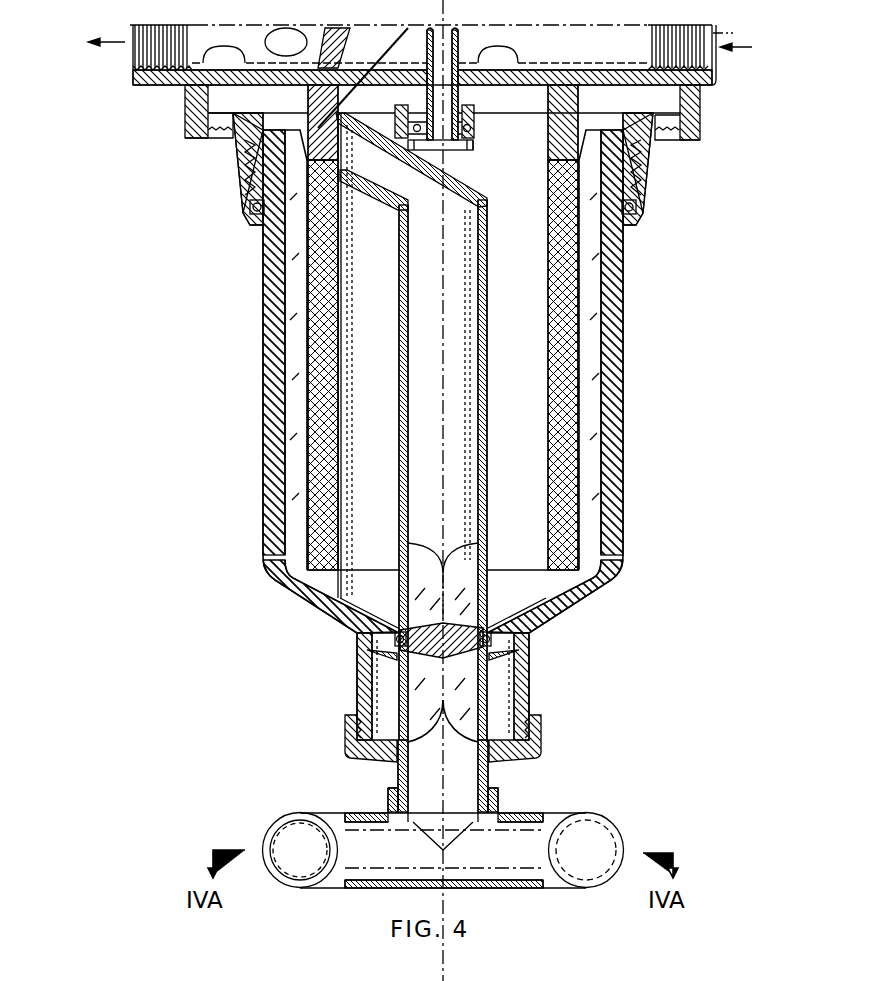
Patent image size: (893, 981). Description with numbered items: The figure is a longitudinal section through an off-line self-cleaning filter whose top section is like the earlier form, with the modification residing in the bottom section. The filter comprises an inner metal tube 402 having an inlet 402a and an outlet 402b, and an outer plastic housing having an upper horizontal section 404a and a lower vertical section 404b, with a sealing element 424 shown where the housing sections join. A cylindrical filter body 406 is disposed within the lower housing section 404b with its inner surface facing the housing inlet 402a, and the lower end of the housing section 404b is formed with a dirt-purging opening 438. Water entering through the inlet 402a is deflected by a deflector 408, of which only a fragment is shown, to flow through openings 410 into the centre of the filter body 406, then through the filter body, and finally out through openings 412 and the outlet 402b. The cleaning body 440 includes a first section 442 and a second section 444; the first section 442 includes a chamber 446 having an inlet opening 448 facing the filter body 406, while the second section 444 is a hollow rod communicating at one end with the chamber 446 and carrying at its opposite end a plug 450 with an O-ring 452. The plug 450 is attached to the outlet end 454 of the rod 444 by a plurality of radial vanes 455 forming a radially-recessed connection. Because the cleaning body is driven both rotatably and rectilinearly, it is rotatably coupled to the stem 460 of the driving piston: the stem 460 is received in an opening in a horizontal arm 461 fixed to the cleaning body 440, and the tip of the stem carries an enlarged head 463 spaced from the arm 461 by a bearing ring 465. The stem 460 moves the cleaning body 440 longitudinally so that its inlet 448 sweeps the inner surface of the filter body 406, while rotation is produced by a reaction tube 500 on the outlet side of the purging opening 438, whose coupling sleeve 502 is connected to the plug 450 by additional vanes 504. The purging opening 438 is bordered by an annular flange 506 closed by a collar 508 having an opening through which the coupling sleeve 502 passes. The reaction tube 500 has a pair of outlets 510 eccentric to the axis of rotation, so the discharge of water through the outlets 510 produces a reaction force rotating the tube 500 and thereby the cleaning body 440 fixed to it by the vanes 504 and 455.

The inner metal tube 402 is at (150, 103).
The inlet 402a is at (710, 72).
The outlet 402b is at (133, 70).
The upper horizontal section 404a is at (668, 126).
The lower vertical section 404b is at (620, 402).
The cylindrical filter body 406 is at (560, 500).
The deflector 408 is at (425, 44).
The openings 410 is at (506, 54).
The openings 412 is at (285, 28).
The O-ring seal and clamp sleeve 424 is at (637, 208).
The dirt-purging opening 438 is at (367, 658).
The cleaning body 440 is at (391, 354).
The first section 442 is at (376, 192).
The second section 444 is at (406, 478).
The chamber 446 is at (328, 154).
The inlet opening 448 is at (312, 106).
The plug 450 is at (484, 650).
The O-ring 452 is at (492, 640).
The outlet end 454 is at (480, 560).
The radial vanes 455 is at (466, 608).
The stem 460 is at (470, 105).
The horizontal arm 461 is at (474, 118).
The enlarged head 463 is at (478, 150).
The bearing ring 465 is at (470, 150).
The reaction tube 500 is at (550, 815).
The coupling sleeve 502 is at (488, 782).
The additional vanes 504 is at (398, 678).
The annular flange 506 is at (529, 695).
The collar 508 is at (358, 745).
The outlets 510 is at (291, 889).